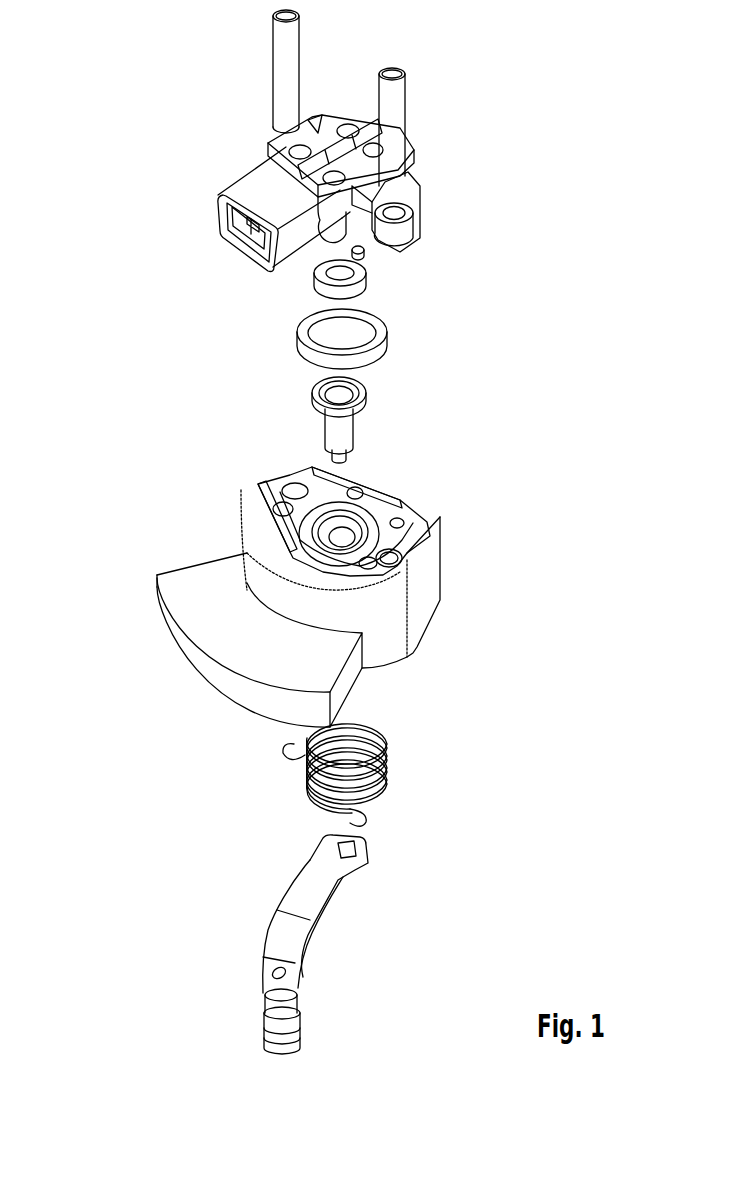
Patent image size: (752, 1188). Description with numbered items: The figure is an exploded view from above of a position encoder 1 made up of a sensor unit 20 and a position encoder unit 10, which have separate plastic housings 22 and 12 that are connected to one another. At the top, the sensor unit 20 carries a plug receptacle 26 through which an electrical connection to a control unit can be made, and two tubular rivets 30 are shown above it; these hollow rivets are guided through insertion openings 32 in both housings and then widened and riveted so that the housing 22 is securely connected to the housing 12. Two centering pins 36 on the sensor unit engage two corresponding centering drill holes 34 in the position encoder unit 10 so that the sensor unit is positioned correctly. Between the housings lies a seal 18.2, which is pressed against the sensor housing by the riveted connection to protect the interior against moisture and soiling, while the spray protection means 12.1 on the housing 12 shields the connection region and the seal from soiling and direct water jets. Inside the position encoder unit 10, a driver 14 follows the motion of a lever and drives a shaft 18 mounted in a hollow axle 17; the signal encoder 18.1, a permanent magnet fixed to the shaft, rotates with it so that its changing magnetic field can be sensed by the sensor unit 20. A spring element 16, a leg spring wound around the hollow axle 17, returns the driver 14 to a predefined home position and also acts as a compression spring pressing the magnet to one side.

The position encoder 1 is at (95, 65).
The position encoder unit 10 is at (116, 514).
The housing 12 is at (432, 565).
The spray protection means 12.1 is at (397, 493).
The driver 14 is at (318, 902).
The spring element 16 is at (386, 775).
The hollow axle 17 is at (347, 540).
The shaft 18 is at (344, 428).
The signal encoder 18.1 is at (352, 290).
The seal 18.2 is at (382, 336).
The sensor unit 20 is at (210, 155).
The housing 22 is at (405, 199).
The plug receptacle 26 is at (247, 251).
The tubular rivet 30 is at (286, 56).
The insertion openings 32 is at (396, 213).
The centering drill holes 34 is at (283, 505).
The centering pins 36 is at (363, 255).